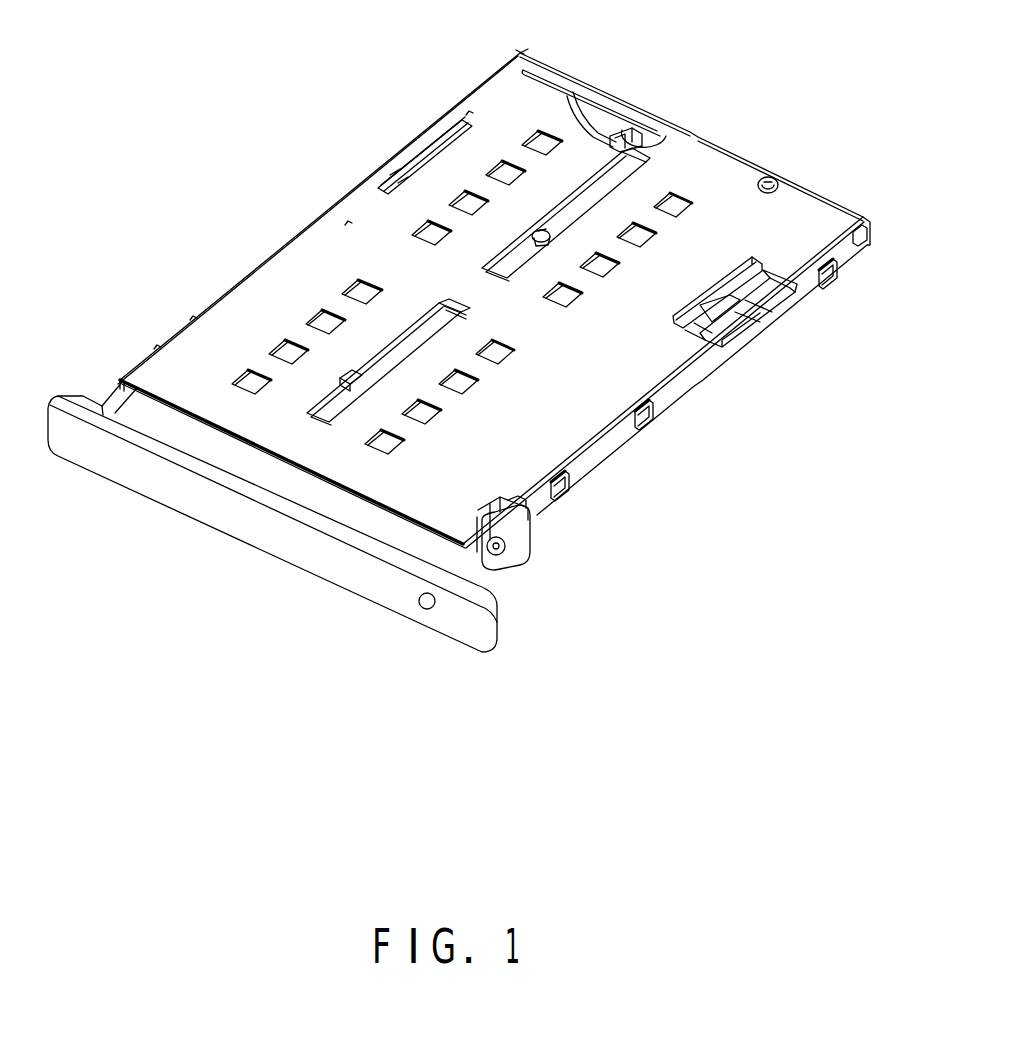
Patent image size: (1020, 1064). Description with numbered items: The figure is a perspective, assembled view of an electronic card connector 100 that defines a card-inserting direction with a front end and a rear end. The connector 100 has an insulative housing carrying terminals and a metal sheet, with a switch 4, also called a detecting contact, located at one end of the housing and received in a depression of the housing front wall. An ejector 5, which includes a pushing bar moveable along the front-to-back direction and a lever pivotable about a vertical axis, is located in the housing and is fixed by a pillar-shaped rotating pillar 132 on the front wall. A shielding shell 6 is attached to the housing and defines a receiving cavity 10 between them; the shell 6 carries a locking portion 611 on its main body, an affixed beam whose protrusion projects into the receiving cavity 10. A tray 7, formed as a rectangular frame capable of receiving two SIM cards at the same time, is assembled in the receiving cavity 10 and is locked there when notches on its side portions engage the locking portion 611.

The electronic card connector 100 is at (296, 192).
The switch 4 is at (590, 122).
The shielding shell 6 is at (703, 172).
The rotating pillar 132 is at (781, 186).
The ejector 5 is at (767, 300).
The locking portion 611 is at (743, 282).
The receiving cavity 10 is at (463, 549).
The tray 7 is at (298, 540).